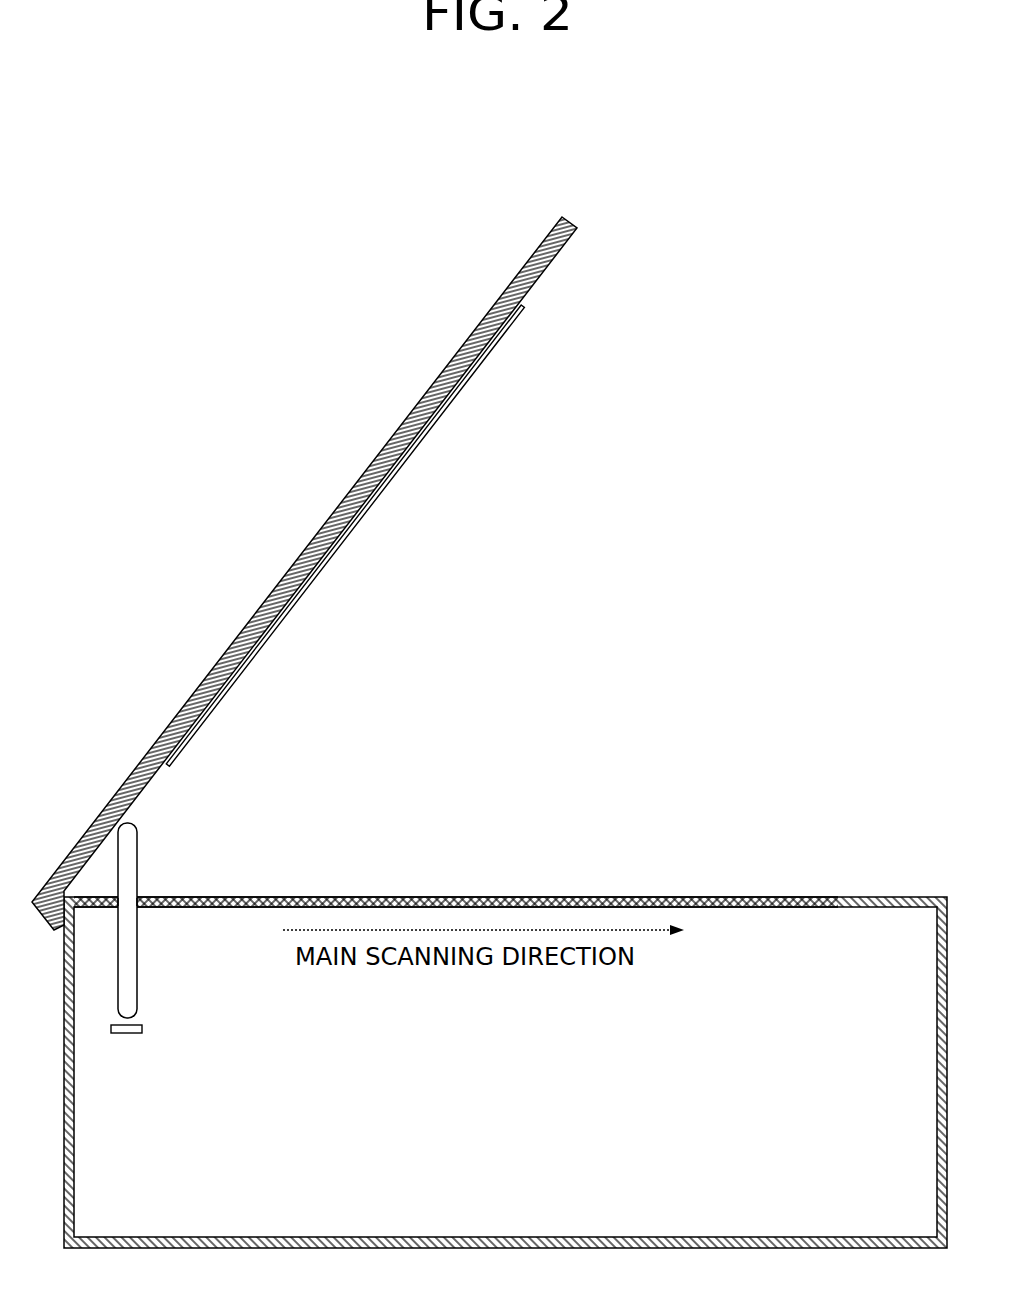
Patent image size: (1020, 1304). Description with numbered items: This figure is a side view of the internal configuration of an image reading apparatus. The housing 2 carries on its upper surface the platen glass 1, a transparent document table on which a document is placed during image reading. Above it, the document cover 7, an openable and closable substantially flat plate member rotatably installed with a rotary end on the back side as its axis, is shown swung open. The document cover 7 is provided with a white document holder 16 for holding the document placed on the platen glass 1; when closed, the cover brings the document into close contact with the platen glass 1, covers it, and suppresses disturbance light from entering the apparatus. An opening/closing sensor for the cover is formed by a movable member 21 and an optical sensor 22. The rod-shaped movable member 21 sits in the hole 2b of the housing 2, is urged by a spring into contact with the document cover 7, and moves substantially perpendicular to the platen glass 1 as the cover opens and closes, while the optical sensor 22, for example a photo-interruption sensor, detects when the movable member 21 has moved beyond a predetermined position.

The platen glass 1 is at (793, 907).
The housing 2 is at (893, 907).
The hole 2b is at (104, 916).
The document cover 7 is at (575, 224).
The document holder 16 is at (483, 358).
The movable member 21 is at (128, 873).
The optical sensor 22 is at (113, 1026).